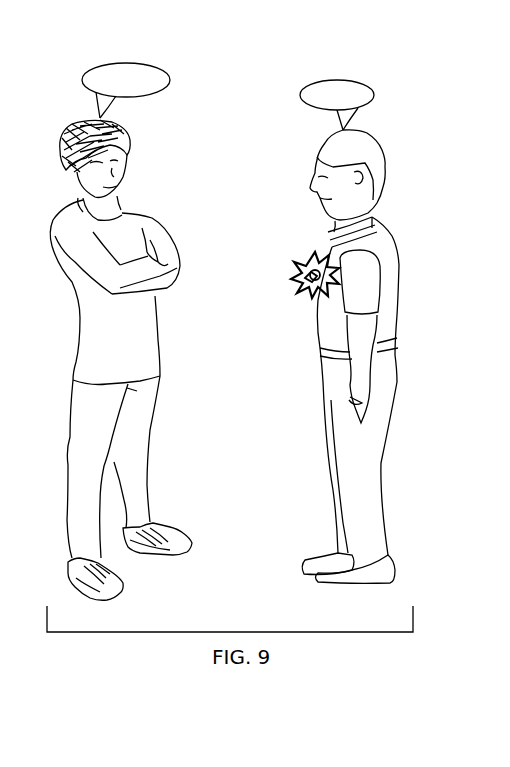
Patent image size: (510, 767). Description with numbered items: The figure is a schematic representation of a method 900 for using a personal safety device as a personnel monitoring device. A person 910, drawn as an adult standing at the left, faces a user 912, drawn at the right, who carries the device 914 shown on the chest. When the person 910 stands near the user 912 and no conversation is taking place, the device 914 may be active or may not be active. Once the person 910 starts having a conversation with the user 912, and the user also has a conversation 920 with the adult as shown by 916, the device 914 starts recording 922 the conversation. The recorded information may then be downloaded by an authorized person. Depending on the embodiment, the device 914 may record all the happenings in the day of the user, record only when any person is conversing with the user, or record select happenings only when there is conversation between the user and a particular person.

The method 900 is at (378, 24).
The person 910 is at (63, 219).
The user 912 is at (385, 243).
The device 914 is at (297, 268).
The conversation indication 916 is at (100, 65).
The conversation 920 is at (353, 80).
The recording 922 is at (300, 290).